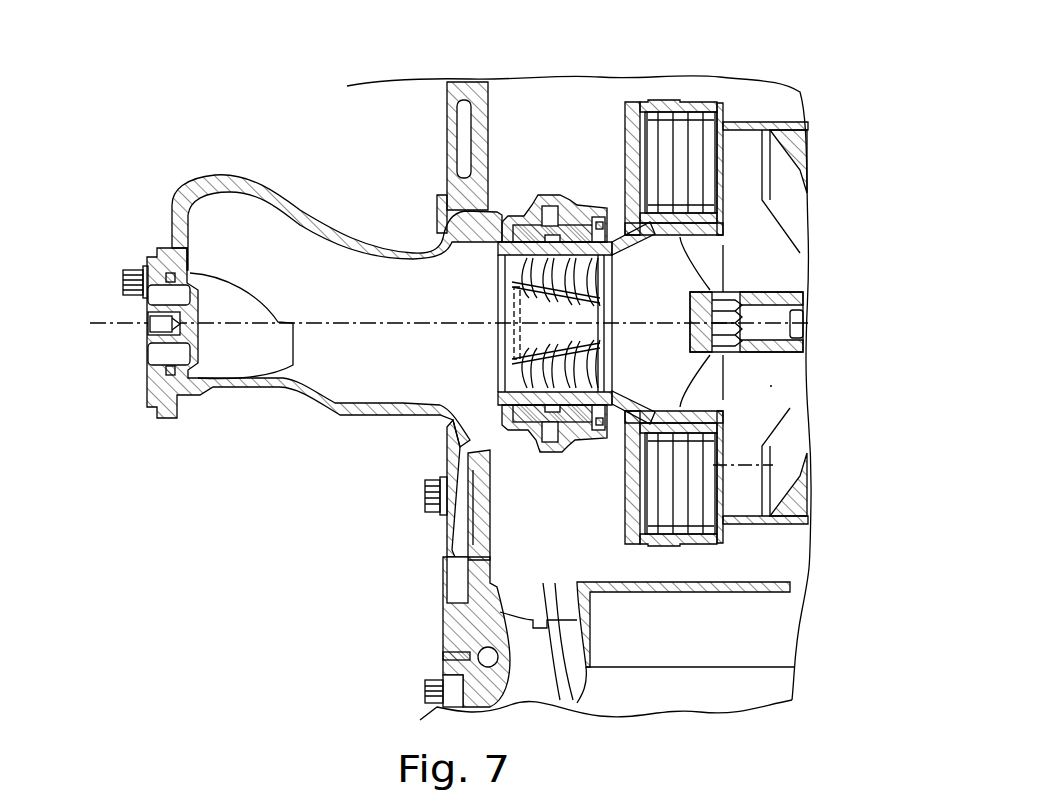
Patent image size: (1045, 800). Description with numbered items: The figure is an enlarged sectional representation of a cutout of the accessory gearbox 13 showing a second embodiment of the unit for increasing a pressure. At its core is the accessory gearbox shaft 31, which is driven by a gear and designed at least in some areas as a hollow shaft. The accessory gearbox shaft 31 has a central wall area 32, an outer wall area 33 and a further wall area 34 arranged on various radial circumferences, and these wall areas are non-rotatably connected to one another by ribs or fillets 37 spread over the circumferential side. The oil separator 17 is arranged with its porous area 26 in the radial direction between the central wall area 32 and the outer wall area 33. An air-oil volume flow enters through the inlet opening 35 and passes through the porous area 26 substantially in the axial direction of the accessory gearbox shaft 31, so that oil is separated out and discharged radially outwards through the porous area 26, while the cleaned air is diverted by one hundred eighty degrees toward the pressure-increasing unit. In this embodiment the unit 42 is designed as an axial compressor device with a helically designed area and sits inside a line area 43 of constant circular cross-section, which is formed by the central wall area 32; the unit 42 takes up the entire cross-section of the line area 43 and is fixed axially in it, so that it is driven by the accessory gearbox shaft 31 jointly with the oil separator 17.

The accessory gearbox 13 is at (661, 96).
The oil separator 17 is at (701, 96).
The porous area 26 is at (688, 168).
The accessory gearbox shaft 31 is at (783, 295).
The central wall area 32 is at (718, 428).
The outer wall area 33 is at (702, 540).
The wall area 34 is at (776, 352).
The inlet opening 35 is at (503, 693).
The ribs or fillets 37 is at (772, 386).
The unit for increasing a pressure 42 is at (616, 299).
The line area 43 is at (617, 410).